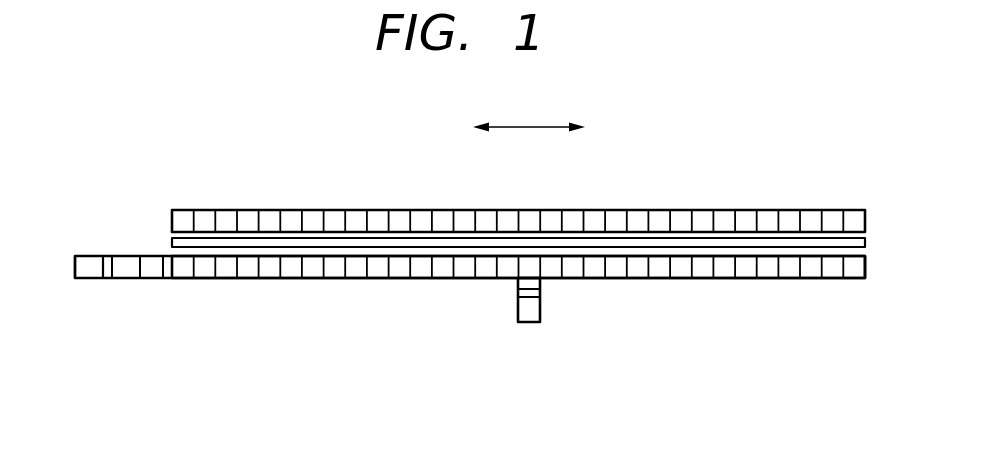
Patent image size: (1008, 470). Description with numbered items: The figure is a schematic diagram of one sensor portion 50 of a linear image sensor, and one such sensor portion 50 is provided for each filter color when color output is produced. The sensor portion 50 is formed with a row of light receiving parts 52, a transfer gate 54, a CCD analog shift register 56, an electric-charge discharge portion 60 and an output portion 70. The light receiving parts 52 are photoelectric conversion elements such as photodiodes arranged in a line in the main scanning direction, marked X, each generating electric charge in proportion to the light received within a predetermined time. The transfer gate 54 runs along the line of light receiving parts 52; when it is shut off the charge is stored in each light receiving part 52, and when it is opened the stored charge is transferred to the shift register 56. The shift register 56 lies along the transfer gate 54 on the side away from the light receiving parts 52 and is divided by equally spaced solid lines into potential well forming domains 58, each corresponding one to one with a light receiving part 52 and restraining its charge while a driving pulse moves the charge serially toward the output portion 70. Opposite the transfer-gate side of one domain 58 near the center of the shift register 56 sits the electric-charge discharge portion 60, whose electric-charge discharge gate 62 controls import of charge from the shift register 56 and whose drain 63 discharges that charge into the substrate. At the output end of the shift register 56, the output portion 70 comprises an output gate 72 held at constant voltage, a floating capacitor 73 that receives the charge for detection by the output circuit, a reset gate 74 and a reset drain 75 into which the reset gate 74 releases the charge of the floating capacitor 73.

The sensor portion 50 is at (452, 240).
The light receiving parts 52 is at (184, 224).
The transfer gate 54 is at (173, 243).
The CCD analog shift register 56 is at (442, 318).
The potential well forming domains 58 is at (188, 268).
The electric-charge discharge portion 60 is at (478, 322).
The electric-charge discharge gate 62 is at (518, 293).
The drain 63 is at (518, 309).
The output portion 70 is at (98, 317).
The output gate 72 is at (156, 294).
The floating capacitor 73 is at (125, 267).
The reset gate 74 is at (107, 267).
The reset drain 75 is at (88, 266).